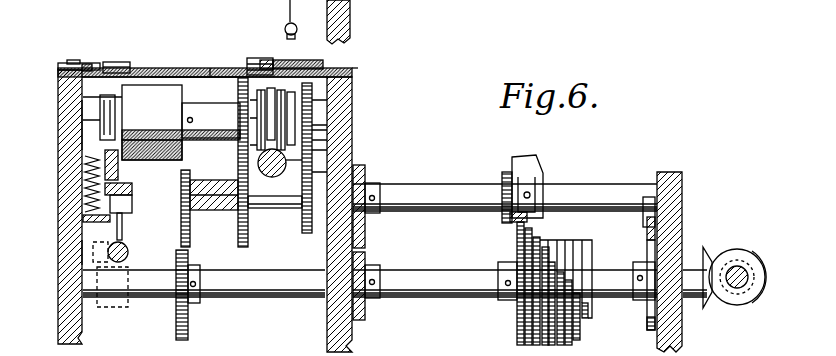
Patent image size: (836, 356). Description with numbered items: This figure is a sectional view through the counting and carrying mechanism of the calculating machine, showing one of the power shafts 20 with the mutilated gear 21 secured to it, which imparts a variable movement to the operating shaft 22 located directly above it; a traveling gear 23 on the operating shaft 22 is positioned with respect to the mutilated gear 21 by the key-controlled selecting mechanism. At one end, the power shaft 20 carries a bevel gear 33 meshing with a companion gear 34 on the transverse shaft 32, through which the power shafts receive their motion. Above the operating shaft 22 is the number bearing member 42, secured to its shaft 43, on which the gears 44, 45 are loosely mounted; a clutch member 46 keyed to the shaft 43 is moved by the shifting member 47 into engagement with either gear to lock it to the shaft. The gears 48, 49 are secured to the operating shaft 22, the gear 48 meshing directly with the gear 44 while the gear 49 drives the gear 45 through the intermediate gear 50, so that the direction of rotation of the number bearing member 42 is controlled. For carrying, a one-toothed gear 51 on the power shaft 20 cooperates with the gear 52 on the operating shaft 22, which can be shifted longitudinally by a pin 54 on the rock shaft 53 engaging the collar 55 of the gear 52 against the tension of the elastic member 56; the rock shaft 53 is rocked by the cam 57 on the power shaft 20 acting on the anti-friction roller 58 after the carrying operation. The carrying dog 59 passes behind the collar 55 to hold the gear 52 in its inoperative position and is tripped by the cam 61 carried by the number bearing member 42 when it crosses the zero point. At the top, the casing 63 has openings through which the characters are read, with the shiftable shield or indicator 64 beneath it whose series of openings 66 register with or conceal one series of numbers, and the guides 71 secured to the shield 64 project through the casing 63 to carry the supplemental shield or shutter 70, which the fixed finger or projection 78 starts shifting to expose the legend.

The power shaft 20 is at (427, 275).
The mutilated gear 21 is at (522, 228).
The operating shaft 22 is at (608, 193).
The traveling gear 23 is at (503, 173).
The shaft 32 is at (738, 288).
The bevel gear 33 is at (707, 247).
The companion gear 34 is at (763, 263).
The number bearing member 42 is at (140, 85).
The shaft 43 is at (92, 125).
The gear 44 is at (222, 73).
The gear 45 is at (307, 85).
The clutch member 46 is at (292, 118).
The shifting member 47 is at (283, 157).
The gear 48 is at (249, 240).
The gear 49 is at (303, 232).
The intermediate gear 50 is at (302, 172).
The one-toothed gear 51 is at (190, 305).
The gear 52 is at (195, 223).
The rock shaft 53 is at (129, 250).
The pin 54 is at (133, 213).
The collar 55 is at (140, 190).
The elastic member 56 is at (215, 187).
The cam 57 is at (105, 307).
The anti-friction roller 58 is at (88, 248).
The carrying dog 59 is at (90, 182).
The cam 61 is at (108, 110).
The casing 63 is at (90, 66).
The shiftable shield or indicator 64 is at (82, 88).
The series of openings 66 is at (183, 68).
The supplemental shield or shutter 70 is at (215, 70).
The guide 71 is at (114, 62).
The fixed finger or projection 78 is at (352, 67).